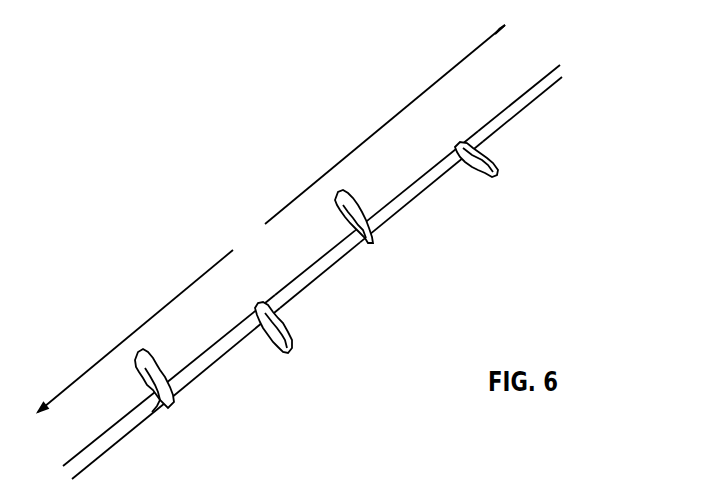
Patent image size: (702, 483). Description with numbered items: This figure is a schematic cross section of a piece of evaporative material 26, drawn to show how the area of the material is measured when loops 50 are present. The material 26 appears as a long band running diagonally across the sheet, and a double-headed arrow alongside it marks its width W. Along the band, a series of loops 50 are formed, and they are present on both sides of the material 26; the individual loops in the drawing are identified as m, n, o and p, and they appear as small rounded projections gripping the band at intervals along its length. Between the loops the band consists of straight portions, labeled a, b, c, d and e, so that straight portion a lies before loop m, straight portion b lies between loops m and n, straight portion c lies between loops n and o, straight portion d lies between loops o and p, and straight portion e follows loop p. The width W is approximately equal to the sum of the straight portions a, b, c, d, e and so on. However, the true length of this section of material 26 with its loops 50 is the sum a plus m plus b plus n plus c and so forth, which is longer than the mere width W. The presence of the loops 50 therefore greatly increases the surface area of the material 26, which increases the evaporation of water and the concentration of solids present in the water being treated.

The evaporative material 26 is at (302, 340).
The loops 50 is at (507, 157).
The width of the material W is at (271, 218).
The straight portion a is at (114, 433).
The straight portion b is at (220, 349).
The straight portion c is at (317, 273).
The straight portion d is at (419, 189).
The straight portion e is at (520, 103).
The loop m is at (143, 380).
The loop n is at (283, 325).
The loop o is at (354, 200).
The loop p is at (530, 145).